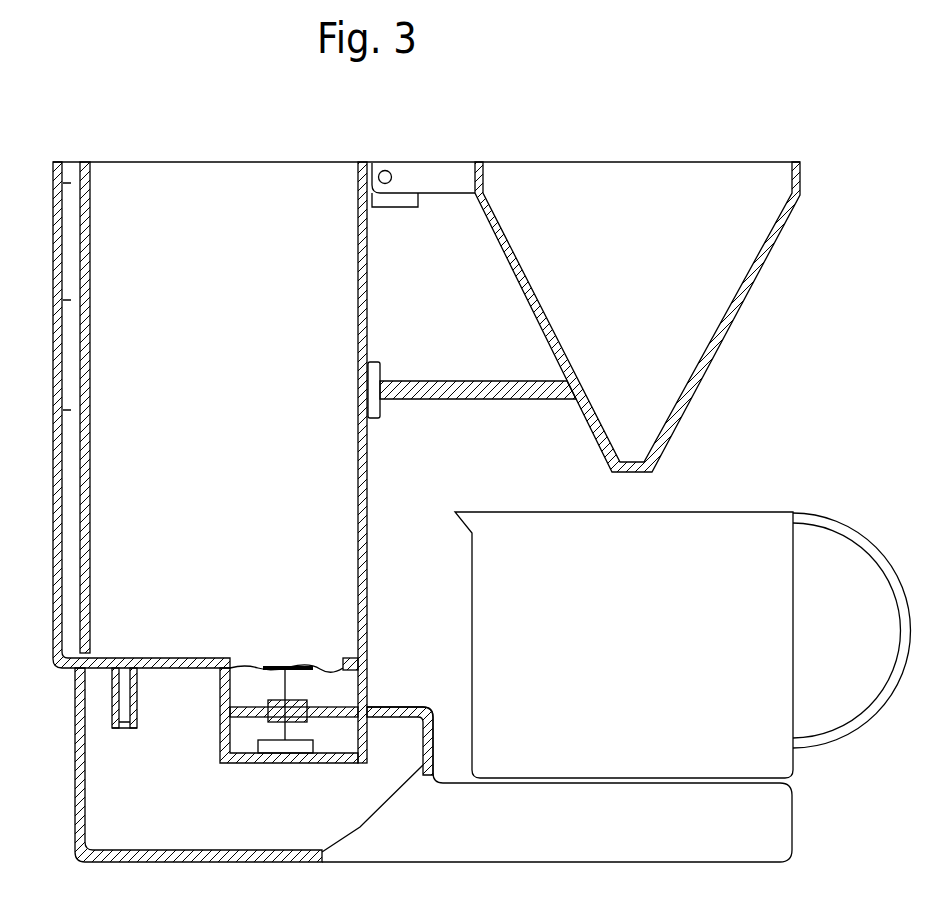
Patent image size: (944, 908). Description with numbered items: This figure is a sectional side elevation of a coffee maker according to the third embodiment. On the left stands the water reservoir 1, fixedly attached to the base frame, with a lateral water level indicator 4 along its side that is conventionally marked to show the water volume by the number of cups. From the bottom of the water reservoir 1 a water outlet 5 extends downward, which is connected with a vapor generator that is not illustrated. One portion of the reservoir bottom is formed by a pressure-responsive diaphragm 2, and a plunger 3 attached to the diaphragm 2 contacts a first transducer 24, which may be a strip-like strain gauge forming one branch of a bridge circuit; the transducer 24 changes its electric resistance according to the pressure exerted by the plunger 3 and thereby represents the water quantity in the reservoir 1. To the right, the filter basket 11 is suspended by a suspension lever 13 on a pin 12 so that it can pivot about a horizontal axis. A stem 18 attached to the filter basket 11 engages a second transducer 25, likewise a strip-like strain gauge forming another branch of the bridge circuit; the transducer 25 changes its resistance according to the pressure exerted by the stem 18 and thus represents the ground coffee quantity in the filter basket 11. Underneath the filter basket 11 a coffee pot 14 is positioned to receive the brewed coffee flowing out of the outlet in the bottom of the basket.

The water reservoir 1 is at (180, 180).
The pressure-responsive diaphragm 2 is at (273, 661).
The plunger 3 is at (283, 688).
The water level indicator 4 is at (73, 162).
The water outlet 5 is at (122, 715).
The filter basket 11 is at (710, 182).
The pin 12 is at (386, 170).
The suspension lever 13 is at (433, 176).
The coffee pot 14 is at (750, 526).
The stem 18 is at (510, 393).
The first transducer 24 is at (291, 745).
The second transducer 25 is at (375, 406).